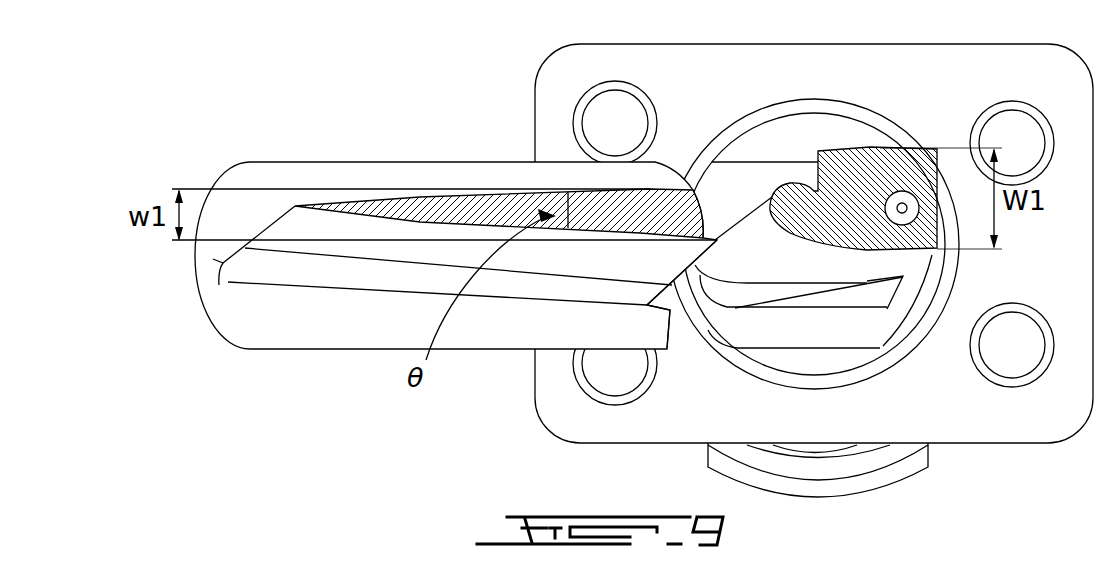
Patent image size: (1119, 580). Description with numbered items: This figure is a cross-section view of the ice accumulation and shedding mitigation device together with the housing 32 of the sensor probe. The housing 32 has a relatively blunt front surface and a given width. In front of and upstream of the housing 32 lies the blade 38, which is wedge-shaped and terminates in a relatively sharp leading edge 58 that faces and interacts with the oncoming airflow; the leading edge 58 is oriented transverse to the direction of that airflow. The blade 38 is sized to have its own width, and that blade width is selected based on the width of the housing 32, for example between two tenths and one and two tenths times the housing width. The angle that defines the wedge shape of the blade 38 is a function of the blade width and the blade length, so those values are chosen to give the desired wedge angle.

The housing 32 is at (848, 168).
The blade 38 is at (359, 186).
The leading edge 58 is at (278, 218).